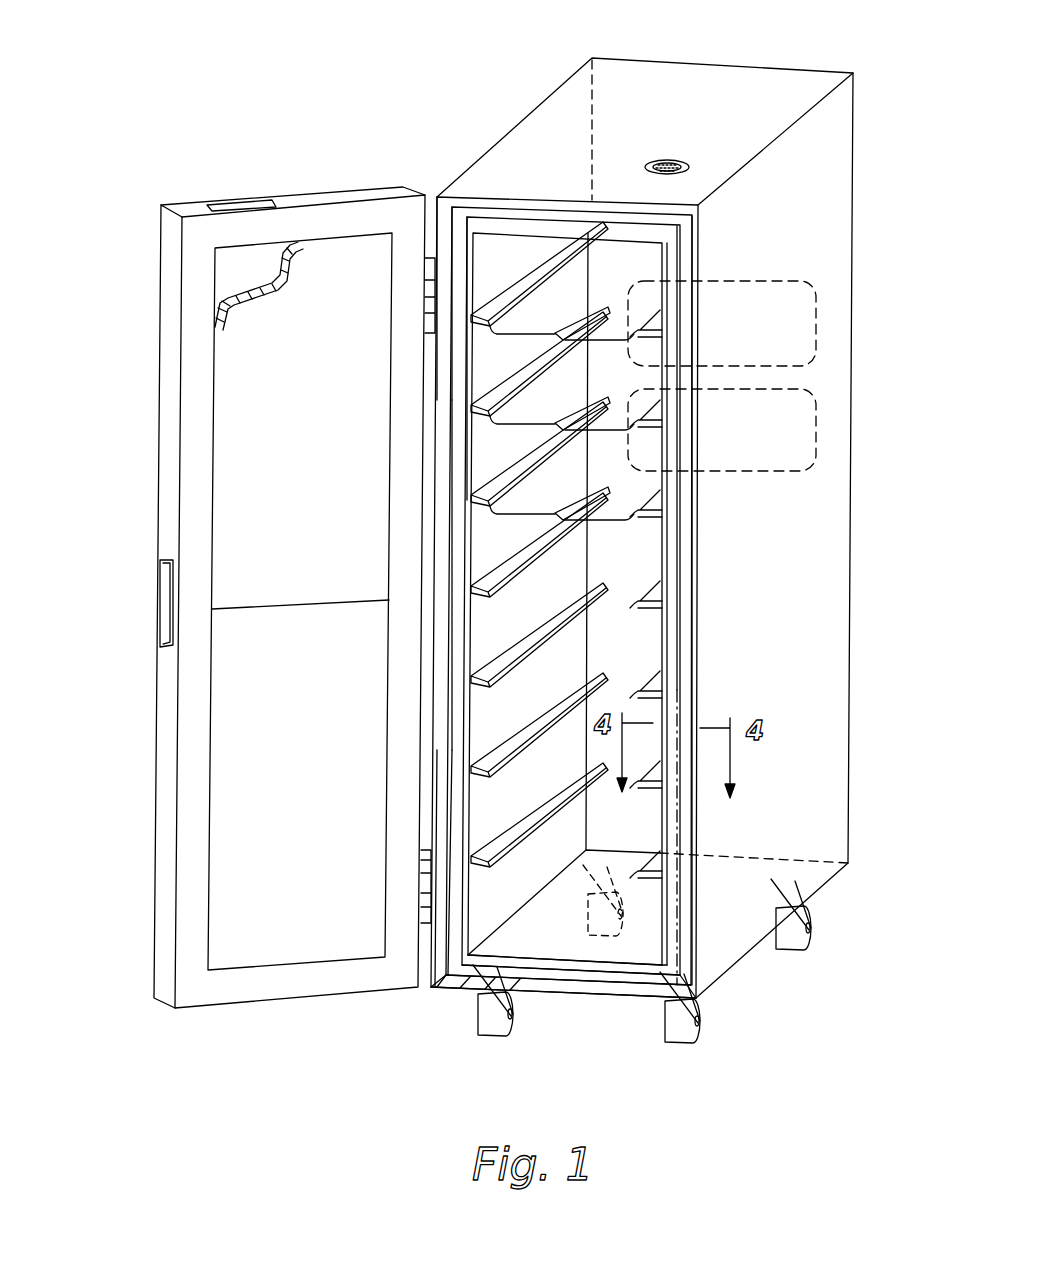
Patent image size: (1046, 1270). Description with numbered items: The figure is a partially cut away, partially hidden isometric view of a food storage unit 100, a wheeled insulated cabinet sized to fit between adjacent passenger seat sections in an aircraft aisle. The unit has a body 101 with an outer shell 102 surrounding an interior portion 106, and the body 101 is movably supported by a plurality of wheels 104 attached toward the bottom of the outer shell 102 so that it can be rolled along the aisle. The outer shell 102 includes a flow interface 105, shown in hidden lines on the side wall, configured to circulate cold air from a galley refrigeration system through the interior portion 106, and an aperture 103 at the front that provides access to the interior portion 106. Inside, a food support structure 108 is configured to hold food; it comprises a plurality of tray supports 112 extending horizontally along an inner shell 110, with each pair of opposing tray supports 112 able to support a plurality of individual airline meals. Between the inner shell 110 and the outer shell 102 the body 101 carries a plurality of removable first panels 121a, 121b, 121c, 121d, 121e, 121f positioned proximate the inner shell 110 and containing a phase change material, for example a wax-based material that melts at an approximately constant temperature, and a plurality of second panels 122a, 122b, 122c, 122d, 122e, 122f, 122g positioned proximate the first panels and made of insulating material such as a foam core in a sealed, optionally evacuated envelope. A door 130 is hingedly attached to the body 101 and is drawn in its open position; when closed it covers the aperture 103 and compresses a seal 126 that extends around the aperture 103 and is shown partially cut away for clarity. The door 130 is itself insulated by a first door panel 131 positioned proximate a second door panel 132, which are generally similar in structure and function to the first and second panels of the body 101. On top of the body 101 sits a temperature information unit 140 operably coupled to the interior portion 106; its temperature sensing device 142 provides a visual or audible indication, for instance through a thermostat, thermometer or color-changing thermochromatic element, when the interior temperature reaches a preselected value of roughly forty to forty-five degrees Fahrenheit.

The food storage unit 100 is at (343, 94).
The body 101 is at (735, 72).
The outer shell 102 is at (847, 498).
The aperture 103 is at (506, 198).
The wheels 104 is at (489, 1040).
The flow interface 105 is at (795, 413).
The interior portion 106 is at (500, 812).
The food support structure 108 is at (567, 965).
The inner shell 110 is at (497, 257).
The tray supports 112 is at (475, 387).
The first panel 121a is at (673, 262).
The first panel 121b is at (671, 617).
The first panel 121c is at (479, 968).
The first panel 121d is at (450, 932).
The first panel 121e is at (457, 271).
The first panel 121f is at (457, 256).
The second panel 122a is at (689, 249).
The second panel 122b is at (683, 517).
The second panel 122c is at (444, 986).
The second panel 122d is at (440, 905).
The second panel 122e is at (450, 680).
The second panel 122f is at (452, 355).
The second panel 122g is at (462, 207).
The seal 126 is at (668, 918).
The door 130 is at (200, 206).
The first door panel 131 is at (237, 463).
The second door panel 132 is at (235, 266).
The temperature information unit 140 is at (688, 165).
The temperature sensing device 142 is at (667, 162).